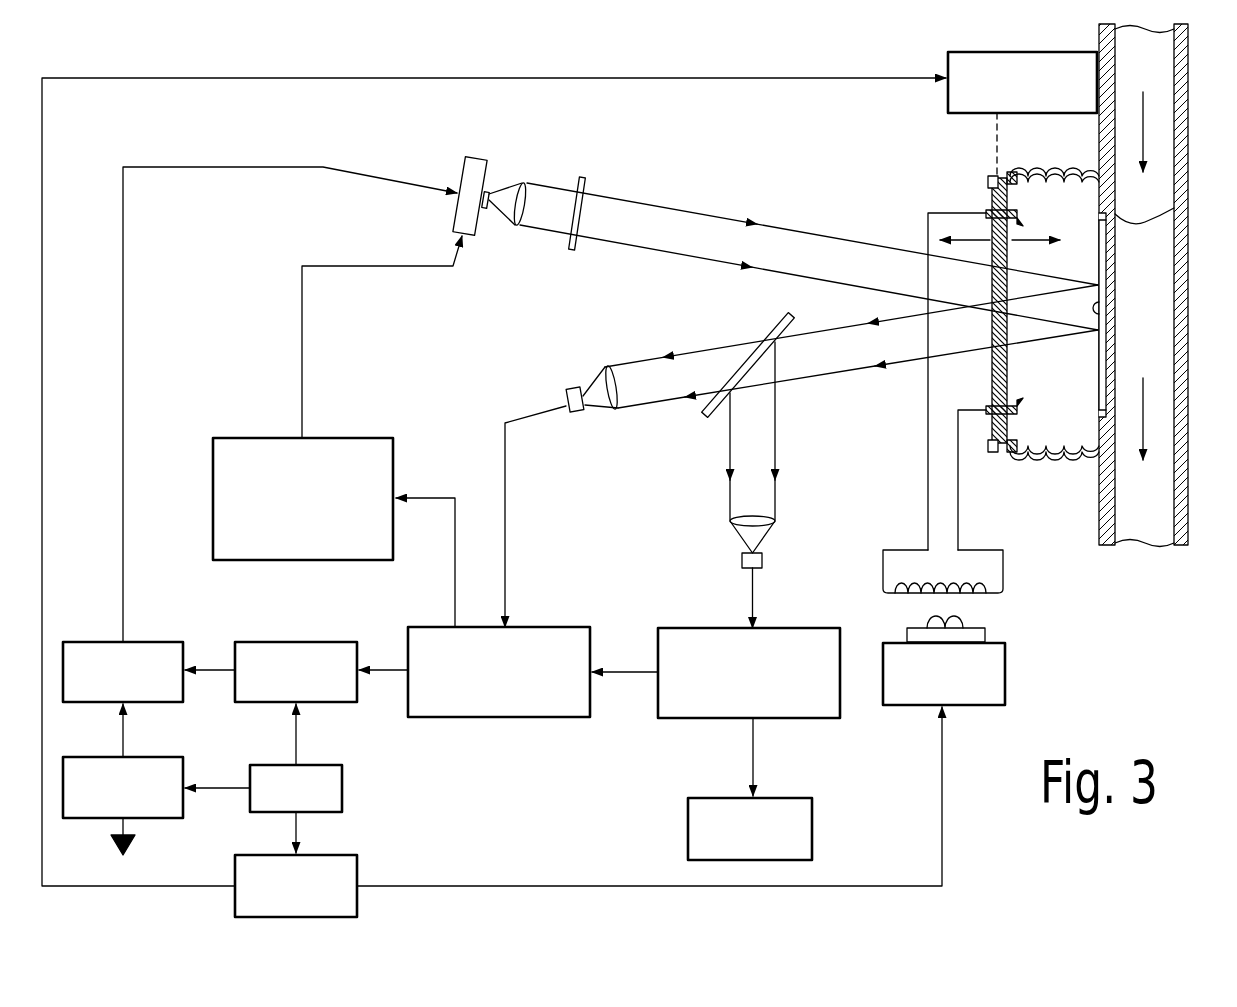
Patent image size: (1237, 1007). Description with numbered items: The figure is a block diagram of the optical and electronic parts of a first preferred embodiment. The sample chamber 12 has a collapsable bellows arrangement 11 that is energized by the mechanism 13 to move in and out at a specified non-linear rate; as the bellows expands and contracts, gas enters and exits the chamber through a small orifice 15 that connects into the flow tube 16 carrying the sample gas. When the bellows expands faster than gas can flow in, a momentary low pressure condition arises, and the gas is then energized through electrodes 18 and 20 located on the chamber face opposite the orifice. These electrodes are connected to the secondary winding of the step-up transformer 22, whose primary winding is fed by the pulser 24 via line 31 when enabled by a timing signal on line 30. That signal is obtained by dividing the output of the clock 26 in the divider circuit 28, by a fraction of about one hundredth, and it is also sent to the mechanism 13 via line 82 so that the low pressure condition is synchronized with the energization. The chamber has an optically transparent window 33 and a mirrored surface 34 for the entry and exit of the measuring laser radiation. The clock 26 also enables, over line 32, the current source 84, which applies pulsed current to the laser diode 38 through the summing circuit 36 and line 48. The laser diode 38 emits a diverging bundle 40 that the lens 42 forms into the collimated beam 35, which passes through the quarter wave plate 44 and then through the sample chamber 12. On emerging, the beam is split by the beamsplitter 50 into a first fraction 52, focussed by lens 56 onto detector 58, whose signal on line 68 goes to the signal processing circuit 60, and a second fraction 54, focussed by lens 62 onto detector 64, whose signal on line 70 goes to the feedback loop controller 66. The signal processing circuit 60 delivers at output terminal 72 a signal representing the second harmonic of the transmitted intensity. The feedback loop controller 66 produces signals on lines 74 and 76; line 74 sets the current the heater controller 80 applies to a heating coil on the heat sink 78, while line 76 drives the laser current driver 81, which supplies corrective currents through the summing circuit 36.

The collapsable bellows arrangement 11 is at (1087, 463).
The sample chamber 12 is at (1070, 387).
The mechanism 13 is at (967, 114).
The orifice 15 is at (1180, 210).
The flow tube 16 is at (1128, 268).
The electrode 18 is at (1017, 217).
The electrode 20 is at (1018, 400).
The step-up transformer 22 is at (972, 567).
The pulser 24 is at (1005, 681).
The clock 26 is at (342, 788).
The divider circuit 28 is at (357, 860).
The line 30 is at (580, 886).
The line 31 is at (985, 636).
The line 32 is at (218, 790).
The optically transparent window 33 is at (992, 372).
The mirrored surface 34 is at (1100, 305).
The collimated beam 35 is at (785, 228).
The summing circuit 36 is at (133, 642).
The laser diode 38 is at (474, 235).
The diverging bundle 40 is at (502, 207).
The lens 42 is at (525, 205).
The quarter wave plate 44 is at (588, 186).
The line 48 is at (123, 305).
The beamsplitter 50 is at (776, 331).
The first fraction 52 is at (777, 441).
The second fraction 54 is at (718, 348).
The lens 56 is at (765, 522).
The detector 58 is at (762, 562).
The signal processing circuit 60 is at (697, 628).
The lens 62 is at (616, 385).
The detector 64 is at (573, 388).
The feedback loop controller 66 is at (548, 717).
The line 68 is at (755, 595).
The line 70 is at (505, 452).
The output terminal 72 is at (688, 826).
The line 74 is at (433, 498).
The line 76 is at (385, 672).
The heat sink 78 is at (478, 158).
The heater controller 80 is at (370, 438).
The laser current driver 81 is at (337, 642).
The line 82 is at (42, 482).
The current source 84 is at (100, 818).